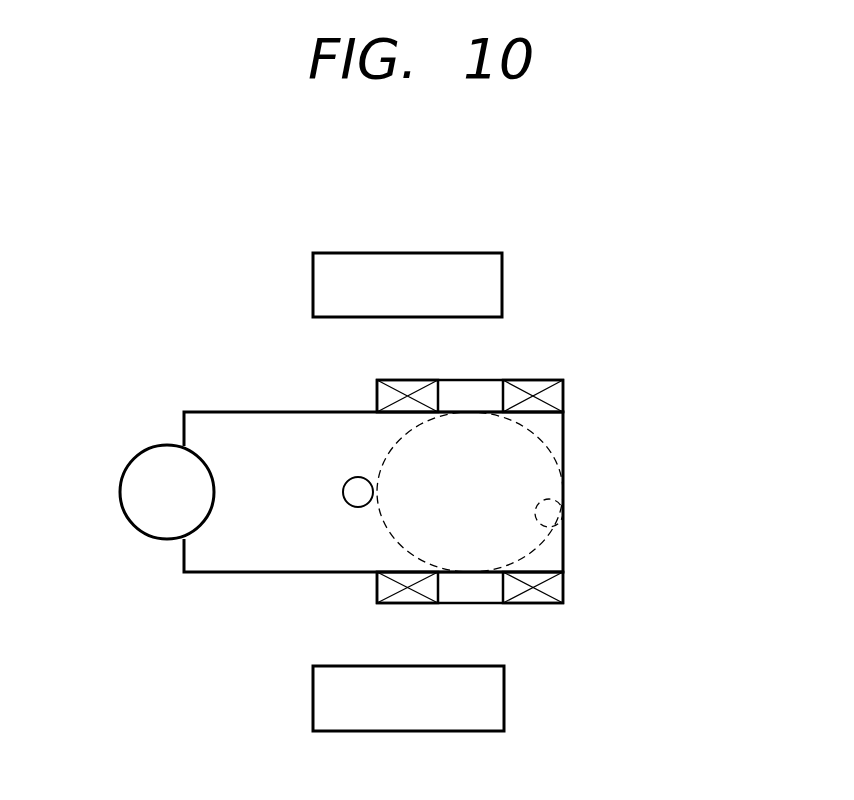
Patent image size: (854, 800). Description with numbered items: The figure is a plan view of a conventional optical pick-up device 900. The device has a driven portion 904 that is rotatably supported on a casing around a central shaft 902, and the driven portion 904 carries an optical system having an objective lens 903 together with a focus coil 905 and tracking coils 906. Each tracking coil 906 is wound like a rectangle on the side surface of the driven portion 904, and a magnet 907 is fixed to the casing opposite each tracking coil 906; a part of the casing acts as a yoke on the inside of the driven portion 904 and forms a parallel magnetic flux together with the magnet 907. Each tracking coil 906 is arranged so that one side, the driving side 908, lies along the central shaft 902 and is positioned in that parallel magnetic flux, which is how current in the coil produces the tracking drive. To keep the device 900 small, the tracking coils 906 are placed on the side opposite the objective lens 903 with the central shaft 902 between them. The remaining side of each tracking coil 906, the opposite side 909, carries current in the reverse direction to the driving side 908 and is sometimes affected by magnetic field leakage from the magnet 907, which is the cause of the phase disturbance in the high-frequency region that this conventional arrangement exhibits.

The optical pick-up device 900 is at (683, 337).
The central shaft 902 is at (353, 498).
The objective lens 903 is at (120, 492).
The driven portion 904 is at (236, 425).
The focus coil 905 is at (563, 501).
The tracking coil 906 is at (470, 383).
The magnet 907 is at (342, 263).
The driving side 908 is at (382, 397).
The opposite side 909 is at (565, 398).